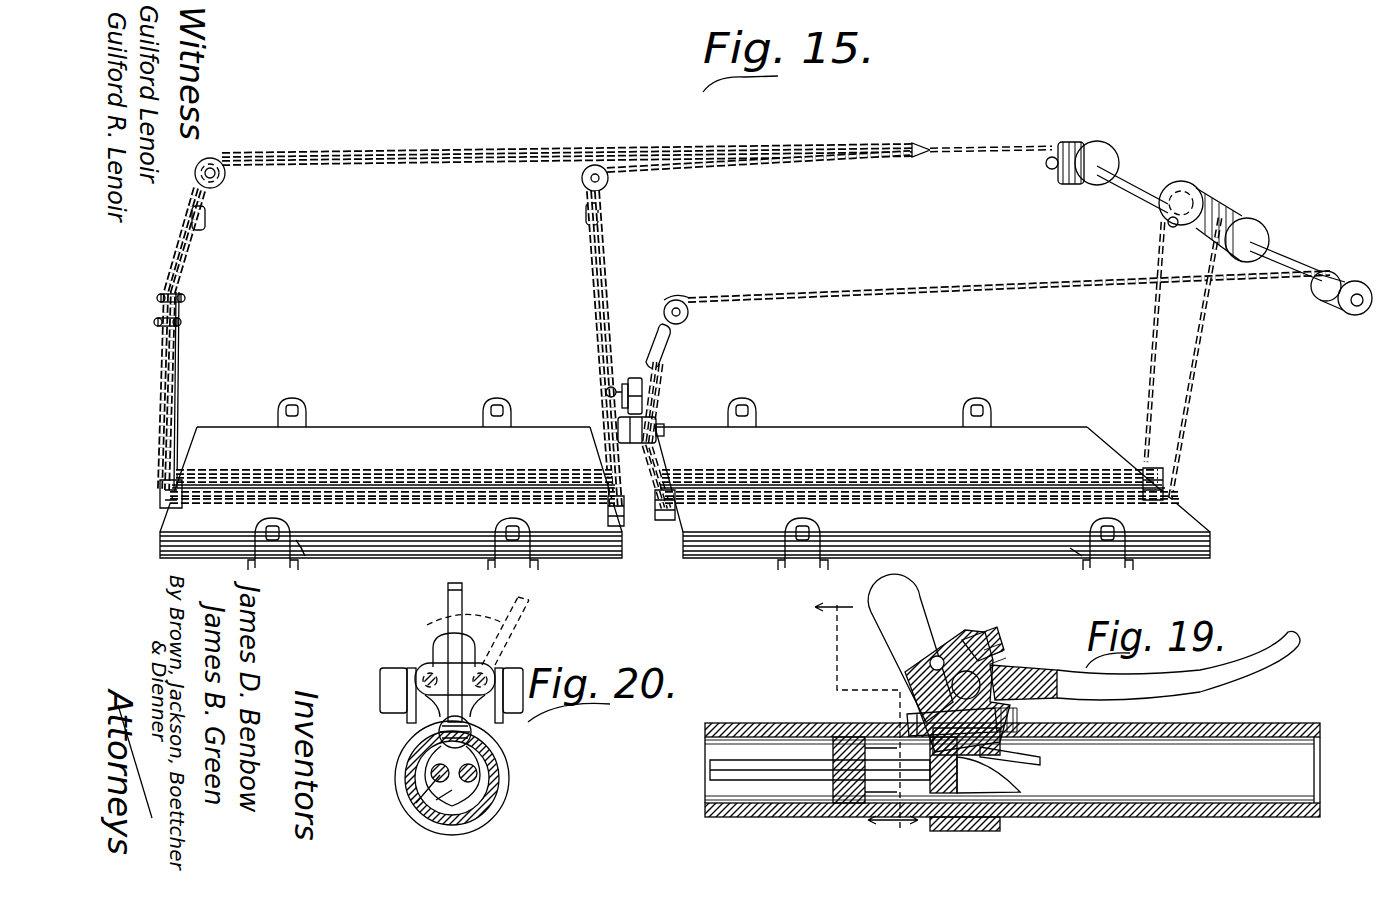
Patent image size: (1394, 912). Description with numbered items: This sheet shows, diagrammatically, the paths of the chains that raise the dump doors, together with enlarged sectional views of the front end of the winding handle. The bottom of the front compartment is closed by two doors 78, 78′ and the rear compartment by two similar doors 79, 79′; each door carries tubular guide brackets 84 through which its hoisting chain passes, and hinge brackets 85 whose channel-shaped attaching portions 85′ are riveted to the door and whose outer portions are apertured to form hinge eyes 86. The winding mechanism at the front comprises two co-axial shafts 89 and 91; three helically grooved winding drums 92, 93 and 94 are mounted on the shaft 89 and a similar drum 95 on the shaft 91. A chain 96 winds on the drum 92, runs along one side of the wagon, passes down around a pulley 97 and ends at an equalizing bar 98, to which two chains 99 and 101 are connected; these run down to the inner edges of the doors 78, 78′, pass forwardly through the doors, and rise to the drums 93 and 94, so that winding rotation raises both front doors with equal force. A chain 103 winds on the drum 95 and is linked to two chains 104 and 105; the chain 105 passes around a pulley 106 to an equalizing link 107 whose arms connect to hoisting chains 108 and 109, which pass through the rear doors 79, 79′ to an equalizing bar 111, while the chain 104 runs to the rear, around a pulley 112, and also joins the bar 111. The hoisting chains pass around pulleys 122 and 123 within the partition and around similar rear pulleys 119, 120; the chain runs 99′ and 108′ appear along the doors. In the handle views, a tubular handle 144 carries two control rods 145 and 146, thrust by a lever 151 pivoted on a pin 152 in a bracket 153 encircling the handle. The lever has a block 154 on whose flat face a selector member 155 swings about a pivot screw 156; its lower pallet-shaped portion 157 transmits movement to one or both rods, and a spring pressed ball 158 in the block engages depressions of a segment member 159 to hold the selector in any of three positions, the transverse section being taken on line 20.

In FIG. 15, the door 78 is at (700, 542).
In FIG. 15, the door 78′ is at (885, 432).
In FIG. 15, the door 79 is at (330, 536).
In FIG. 15, the door 79′ is at (375, 431).
In FIG. 15, the tubular guide bracket 84 is at (178, 498).
In FIG. 15, the hinge bracket 85 is at (306, 418).
In FIG. 15, the attaching portion 85′ is at (302, 548).
In FIG. 15, the hinge eye 86 is at (295, 400).
In FIG. 15, the shaft 89 is at (1295, 259).
In FIG. 15, the shaft 91 is at (1121, 183).
In FIG. 15, the winding drum 92 is at (1352, 281).
In FIG. 15, the winding drum 93 is at (1262, 234).
In FIG. 15, the winding drum 94 is at (1193, 195).
In FIG. 15, the winding drum 95 is at (1105, 151).
In FIG. 15, the chain 96 is at (916, 284).
In FIG. 15, the pulley 97 is at (690, 314).
In FIG. 15, the equalizing bar 98 is at (667, 344).
In FIG. 15, the chain 99 is at (662, 383).
In FIG. 15, the chain run 99′ is at (951, 505).
In FIG. 15, the chain 101 is at (656, 373).
In FIG. 15, the chain 103 is at (980, 141).
In FIG. 15, the chain 104 is at (622, 142).
In FIG. 15, the chain 105 is at (637, 166).
In FIG. 15, the pulley 106 is at (582, 178).
In FIG. 15, the equalizing link 107 is at (586, 213).
In FIG. 15, the chain 108 is at (163, 372).
In FIG. 15, the chain run 108′ is at (397, 504).
In FIG. 15, the chain 109 is at (598, 290).
In FIG. 15, the equalizing bar 111 is at (205, 216).
In FIG. 15, the pulley 112 is at (218, 182).
In FIG. 15, the pulley 119 is at (180, 326).
In FIG. 15, the pulley 120 is at (186, 298).
In FIG. 15, the pulley 122 is at (645, 404).
In FIG. 15, the pulley 123 is at (664, 434).
In FIG. 20, the tubular operating handle 144 is at (487, 800).
In FIG. 19, the tubular operating handle 144 is at (712, 808).
In FIG. 20, the control rod 145 is at (480, 787).
In FIG. 20, the control rod 146 is at (437, 772).
In FIG. 19, the control rod 146 is at (712, 768).
In FIG. 19, the lever 151 is at (1197, 682).
In FIG. 20, the pivot pin 152 is at (380, 692).
In FIG. 19, the pivot pin 152 is at (995, 668).
In FIG. 19, the bracket 153 is at (1001, 829).
In FIG. 20, the block 154 is at (477, 648).
In FIG. 19, the block 154 is at (1000, 776).
In FIG. 20, the selector member 155 is at (455, 624).
In FIG. 19, the selector member 155 is at (877, 614).
In FIG. 20, the pivot screw 156 is at (439, 732).
In FIG. 19, the pivot screw 156 is at (907, 724).
In FIG. 20, the pallet-shaped portion 157 is at (440, 793).
In FIG. 19, the pallet-shaped portion 157 is at (1060, 795).
In FIG. 19, the spring pressed ball 158 is at (940, 656).
In FIG. 19, the segment member 159 is at (952, 678).
In FIG. 19, the section line 20 is at (866, 714).